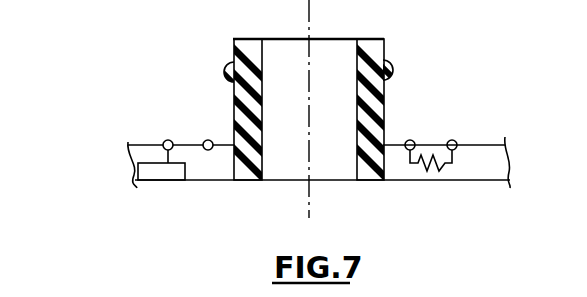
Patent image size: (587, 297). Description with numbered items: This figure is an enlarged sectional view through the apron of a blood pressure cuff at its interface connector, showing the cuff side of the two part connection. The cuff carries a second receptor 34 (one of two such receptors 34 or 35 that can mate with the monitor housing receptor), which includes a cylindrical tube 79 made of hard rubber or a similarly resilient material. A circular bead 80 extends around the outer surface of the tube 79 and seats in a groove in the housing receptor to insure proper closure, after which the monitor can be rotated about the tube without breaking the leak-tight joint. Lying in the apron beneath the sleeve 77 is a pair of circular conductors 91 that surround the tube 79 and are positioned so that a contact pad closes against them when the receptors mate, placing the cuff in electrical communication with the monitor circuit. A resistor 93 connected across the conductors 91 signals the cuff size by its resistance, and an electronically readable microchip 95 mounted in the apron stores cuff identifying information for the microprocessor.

The second receptor 34 is at (327, 53).
The second receptor 35 is at (222, 38).
The sleeve 77 is at (152, 144).
The cylindrical tube 79 is at (385, 123).
The circular bead 80 is at (397, 68).
The circular conductors 91 is at (208, 140).
The resistor 93 is at (438, 165).
The electronically readable microchip 95 is at (133, 172).